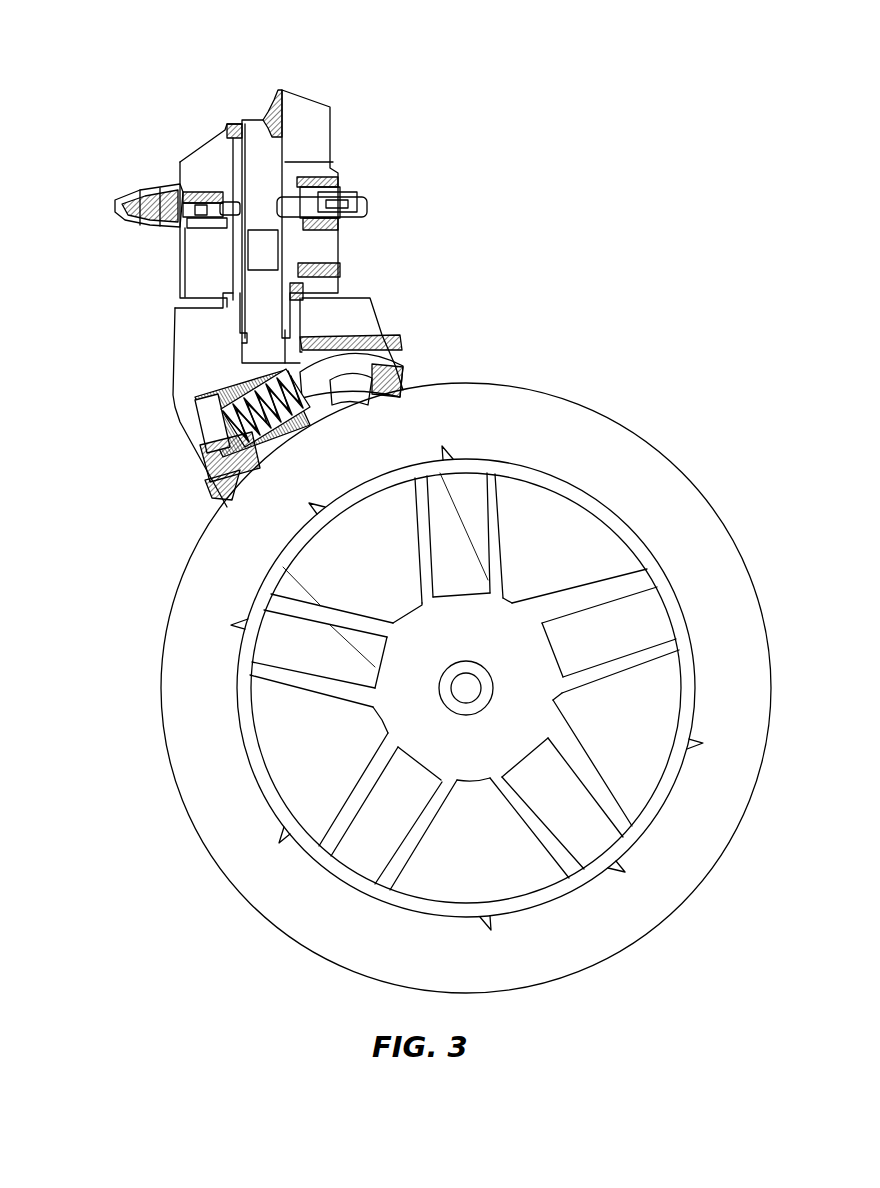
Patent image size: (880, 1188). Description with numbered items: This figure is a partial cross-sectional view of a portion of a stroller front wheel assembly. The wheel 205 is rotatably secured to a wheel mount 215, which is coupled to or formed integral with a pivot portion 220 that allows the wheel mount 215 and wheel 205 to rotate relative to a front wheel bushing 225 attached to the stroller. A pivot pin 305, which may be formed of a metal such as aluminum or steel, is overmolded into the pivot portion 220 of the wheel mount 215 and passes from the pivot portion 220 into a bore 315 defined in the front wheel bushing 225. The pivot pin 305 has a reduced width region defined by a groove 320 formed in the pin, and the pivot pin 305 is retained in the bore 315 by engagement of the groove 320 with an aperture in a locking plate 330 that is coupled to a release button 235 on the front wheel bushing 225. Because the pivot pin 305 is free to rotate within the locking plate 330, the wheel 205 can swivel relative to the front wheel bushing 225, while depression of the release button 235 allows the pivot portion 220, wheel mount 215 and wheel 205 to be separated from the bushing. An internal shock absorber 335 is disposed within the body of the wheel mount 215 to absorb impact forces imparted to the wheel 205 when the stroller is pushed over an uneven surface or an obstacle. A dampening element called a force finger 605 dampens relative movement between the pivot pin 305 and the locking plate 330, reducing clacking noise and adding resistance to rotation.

The wheel 205 is at (553, 437).
The wheel mount 215 is at (188, 426).
The pivot portion 220 is at (188, 352).
The front wheel bushing 225 is at (310, 122).
The release button 235 is at (367, 207).
The pivot pin 305 is at (263, 252).
The bore 315 is at (285, 162).
The groove 320 is at (242, 200).
The locking plate 330 is at (178, 183).
The internal shock absorber 335 is at (203, 467).
The force finger 605 is at (280, 90).